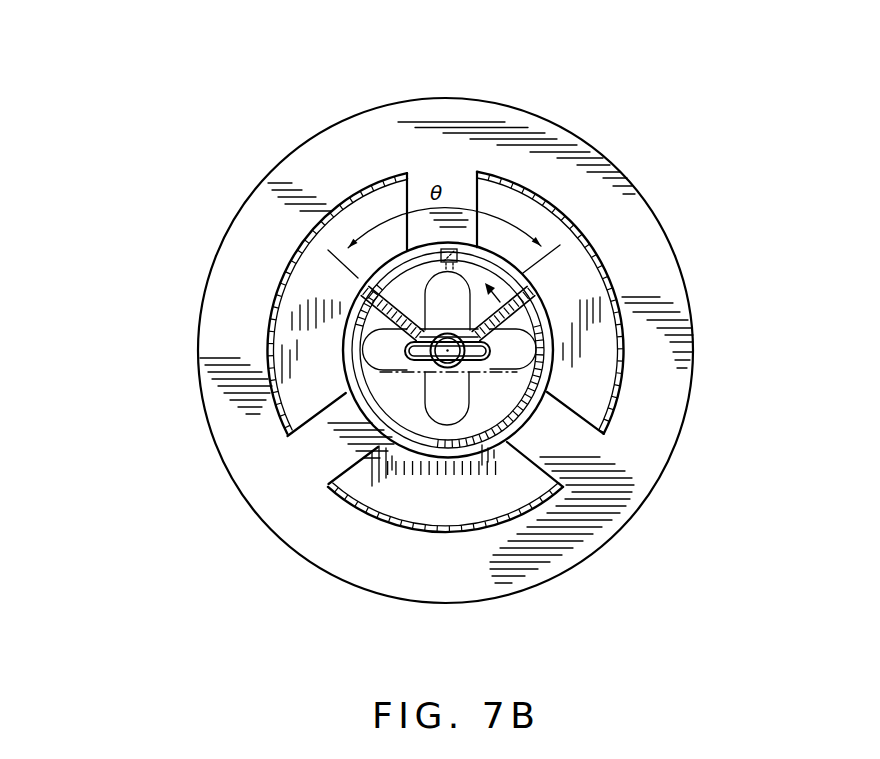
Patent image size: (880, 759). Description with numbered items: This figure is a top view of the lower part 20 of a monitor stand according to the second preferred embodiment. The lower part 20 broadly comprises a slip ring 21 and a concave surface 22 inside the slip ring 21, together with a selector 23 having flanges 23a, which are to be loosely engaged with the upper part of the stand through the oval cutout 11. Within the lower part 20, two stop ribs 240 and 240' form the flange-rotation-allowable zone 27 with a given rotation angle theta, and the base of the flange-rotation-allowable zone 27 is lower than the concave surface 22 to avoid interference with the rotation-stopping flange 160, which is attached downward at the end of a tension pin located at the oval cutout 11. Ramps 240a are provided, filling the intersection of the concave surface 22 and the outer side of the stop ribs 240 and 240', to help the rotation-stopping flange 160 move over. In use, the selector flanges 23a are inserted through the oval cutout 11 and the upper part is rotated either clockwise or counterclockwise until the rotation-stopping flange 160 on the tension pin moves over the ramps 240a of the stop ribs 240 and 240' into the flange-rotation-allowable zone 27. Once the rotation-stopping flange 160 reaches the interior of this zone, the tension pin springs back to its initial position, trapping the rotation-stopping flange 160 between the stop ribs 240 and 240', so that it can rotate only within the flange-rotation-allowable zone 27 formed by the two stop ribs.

The lower part 20 is at (205, 262).
The stop rib 240 is at (293, 277).
The stop rib 240' is at (550, 258).
The ramps 240a is at (500, 322).
The flange-rotation-allowable zone 27 is at (418, 280).
The rotation-stopping flange 160 is at (455, 248).
The selector 23 is at (432, 373).
The flanges 23a is at (495, 355).
The concave surface 22 is at (486, 432).
The slip ring 21 is at (446, 458).
The oval cutout 11 is at (355, 514).